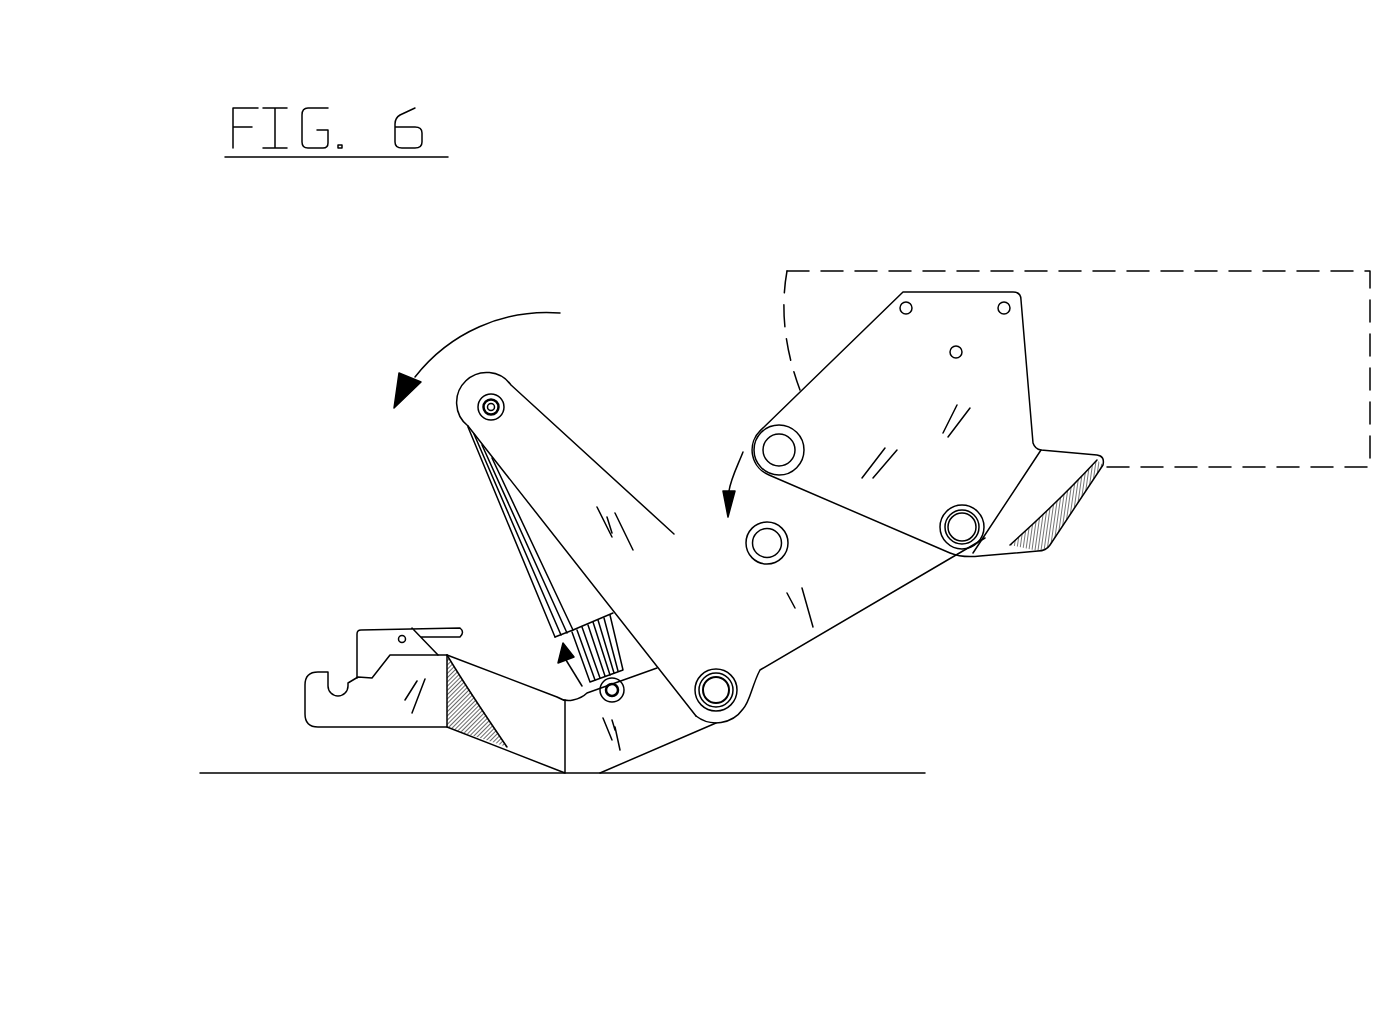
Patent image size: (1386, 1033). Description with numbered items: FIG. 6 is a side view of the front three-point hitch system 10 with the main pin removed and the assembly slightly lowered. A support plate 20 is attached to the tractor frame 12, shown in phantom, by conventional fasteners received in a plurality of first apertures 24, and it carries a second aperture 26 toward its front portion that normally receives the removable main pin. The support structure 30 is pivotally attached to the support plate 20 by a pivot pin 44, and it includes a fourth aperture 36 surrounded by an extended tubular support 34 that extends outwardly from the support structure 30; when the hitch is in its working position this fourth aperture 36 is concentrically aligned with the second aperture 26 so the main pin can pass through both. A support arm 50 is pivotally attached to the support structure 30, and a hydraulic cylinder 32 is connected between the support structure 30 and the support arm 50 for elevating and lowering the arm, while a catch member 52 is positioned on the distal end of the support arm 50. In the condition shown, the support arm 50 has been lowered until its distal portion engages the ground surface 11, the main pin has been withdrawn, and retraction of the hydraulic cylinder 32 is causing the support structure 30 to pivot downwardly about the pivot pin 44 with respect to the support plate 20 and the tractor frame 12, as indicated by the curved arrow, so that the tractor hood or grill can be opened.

The front three-point hitch system 10 is at (1150, 123).
The ground surface 11 is at (534, 696).
The tractor frame 12 is at (1077, 473).
The support plate 20 is at (927, 506).
The first aperture 24 is at (926, 248).
The second aperture 26 is at (753, 319).
The support structure 30 is at (618, 514).
The hydraulic cylinder 32 is at (426, 556).
The extended tubular support 34 is at (835, 630).
The fourth aperture 36 is at (820, 695).
The pivot pin 44 is at (1048, 562).
The support arm 50 is at (645, 730).
The catch member 52 is at (332, 607).